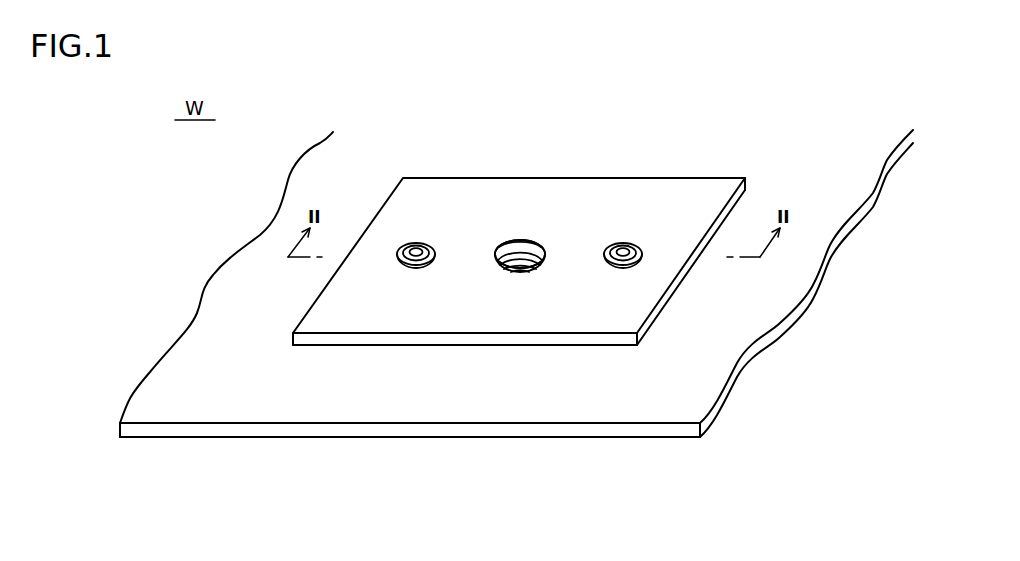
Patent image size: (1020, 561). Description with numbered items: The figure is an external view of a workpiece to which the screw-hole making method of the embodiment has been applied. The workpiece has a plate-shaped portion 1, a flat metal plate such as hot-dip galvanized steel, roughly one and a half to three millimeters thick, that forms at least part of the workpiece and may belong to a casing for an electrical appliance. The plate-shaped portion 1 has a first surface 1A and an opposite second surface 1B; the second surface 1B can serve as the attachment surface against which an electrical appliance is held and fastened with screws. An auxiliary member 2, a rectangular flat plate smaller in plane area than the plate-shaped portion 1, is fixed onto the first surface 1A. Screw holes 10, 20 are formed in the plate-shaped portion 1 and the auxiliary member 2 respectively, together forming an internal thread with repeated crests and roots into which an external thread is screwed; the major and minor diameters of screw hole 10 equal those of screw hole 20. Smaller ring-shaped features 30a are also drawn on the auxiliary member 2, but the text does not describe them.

The plate-shaped portion 1 is at (229, 236).
The first surface 1A is at (228, 372).
The second surface 1B is at (657, 440).
The auxiliary member 2 is at (702, 193).
The screw hole 10 is at (522, 252).
The screw hole 20 is at (517, 169).
The rivet / fastener 30a is at (416, 243).